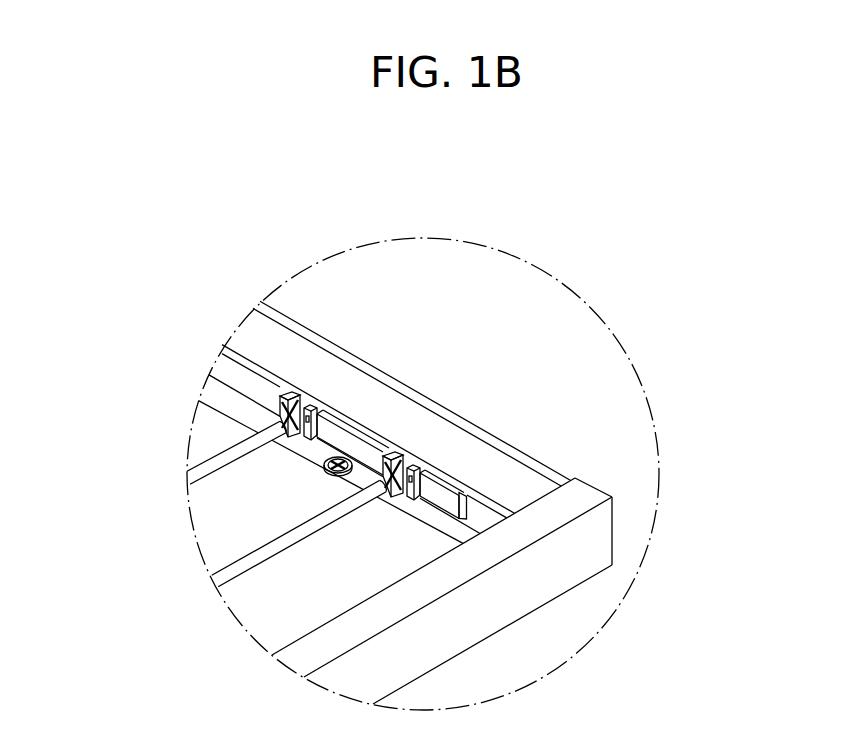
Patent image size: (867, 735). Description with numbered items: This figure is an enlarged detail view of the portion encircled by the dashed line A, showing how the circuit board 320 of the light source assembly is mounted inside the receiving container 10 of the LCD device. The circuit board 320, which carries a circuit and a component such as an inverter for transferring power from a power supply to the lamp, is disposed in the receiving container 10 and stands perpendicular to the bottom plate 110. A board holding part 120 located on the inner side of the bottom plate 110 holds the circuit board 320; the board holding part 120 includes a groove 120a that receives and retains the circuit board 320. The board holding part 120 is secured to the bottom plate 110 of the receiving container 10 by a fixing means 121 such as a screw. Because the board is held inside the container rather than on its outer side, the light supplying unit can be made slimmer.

The receiving container 10 is at (186, 422).
The bottom plate 110 is at (271, 585).
The board holding part 120 is at (502, 447).
The groove 120a is at (480, 523).
The fixing means 121 is at (318, 463).
The circuit board 320 is at (358, 432).
The encircled portion A is at (607, 331).